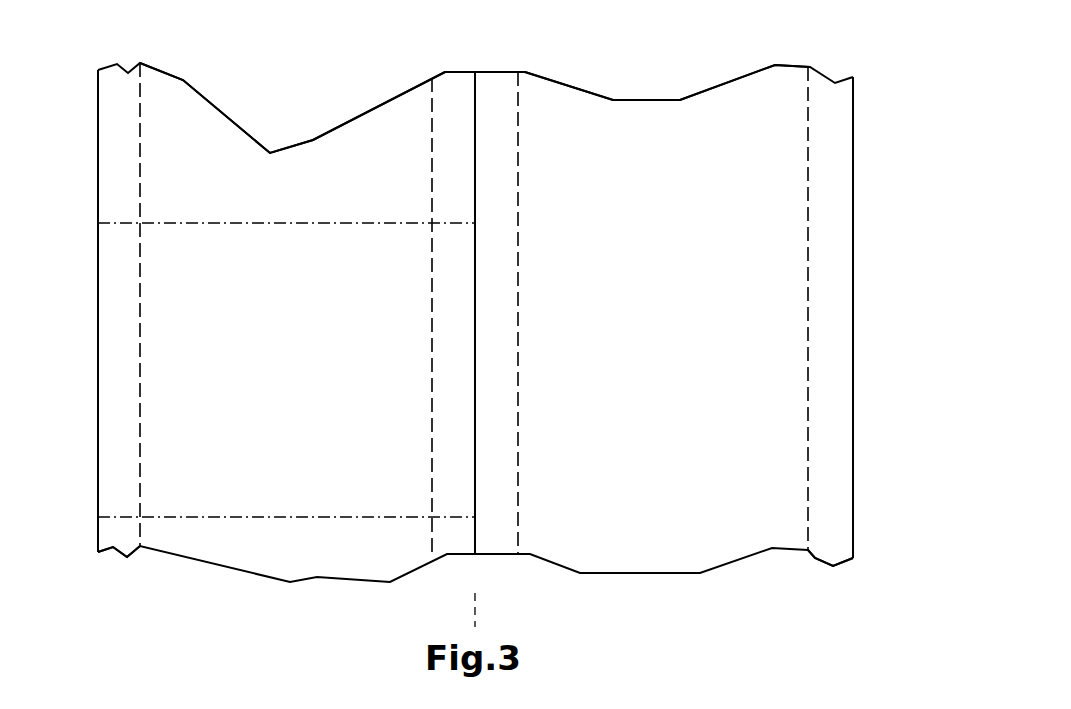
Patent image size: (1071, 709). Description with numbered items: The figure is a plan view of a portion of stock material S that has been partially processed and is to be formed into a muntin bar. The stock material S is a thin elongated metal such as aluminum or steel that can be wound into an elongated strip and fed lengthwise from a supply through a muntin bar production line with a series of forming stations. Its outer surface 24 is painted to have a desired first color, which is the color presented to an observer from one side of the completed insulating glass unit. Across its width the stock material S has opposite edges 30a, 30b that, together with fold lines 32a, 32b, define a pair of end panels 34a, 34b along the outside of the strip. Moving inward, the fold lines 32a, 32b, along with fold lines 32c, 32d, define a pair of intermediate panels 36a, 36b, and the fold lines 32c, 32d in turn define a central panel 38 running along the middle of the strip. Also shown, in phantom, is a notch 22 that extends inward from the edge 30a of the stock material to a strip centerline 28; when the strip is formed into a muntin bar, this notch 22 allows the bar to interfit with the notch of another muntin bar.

The stock material S is at (864, 108).
The notch 22 is at (183, 282).
The outer surface 24 is at (264, 546).
The strip centerline 28 is at (475, 97).
The edge 30a is at (98, 460).
The edge 30b is at (853, 415).
The fold line 32a is at (141, 397).
The fold line 32b is at (808, 390).
The fold line 32c is at (432, 440).
The fold line 32d is at (518, 450).
The end panel 34a is at (118, 533).
The end panel 34b is at (827, 477).
The intermediate panel 36a is at (208, 146).
The intermediate panel 36b is at (648, 135).
The central panel 38 is at (500, 117).